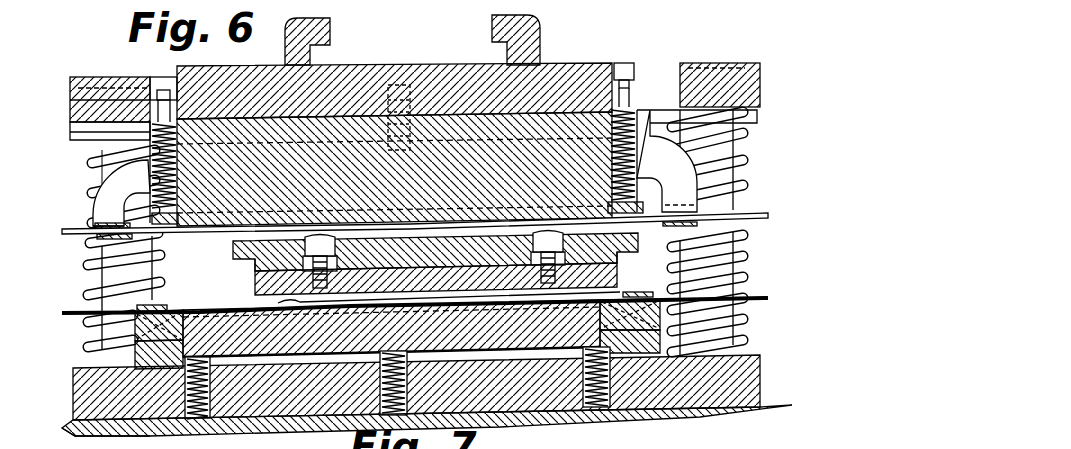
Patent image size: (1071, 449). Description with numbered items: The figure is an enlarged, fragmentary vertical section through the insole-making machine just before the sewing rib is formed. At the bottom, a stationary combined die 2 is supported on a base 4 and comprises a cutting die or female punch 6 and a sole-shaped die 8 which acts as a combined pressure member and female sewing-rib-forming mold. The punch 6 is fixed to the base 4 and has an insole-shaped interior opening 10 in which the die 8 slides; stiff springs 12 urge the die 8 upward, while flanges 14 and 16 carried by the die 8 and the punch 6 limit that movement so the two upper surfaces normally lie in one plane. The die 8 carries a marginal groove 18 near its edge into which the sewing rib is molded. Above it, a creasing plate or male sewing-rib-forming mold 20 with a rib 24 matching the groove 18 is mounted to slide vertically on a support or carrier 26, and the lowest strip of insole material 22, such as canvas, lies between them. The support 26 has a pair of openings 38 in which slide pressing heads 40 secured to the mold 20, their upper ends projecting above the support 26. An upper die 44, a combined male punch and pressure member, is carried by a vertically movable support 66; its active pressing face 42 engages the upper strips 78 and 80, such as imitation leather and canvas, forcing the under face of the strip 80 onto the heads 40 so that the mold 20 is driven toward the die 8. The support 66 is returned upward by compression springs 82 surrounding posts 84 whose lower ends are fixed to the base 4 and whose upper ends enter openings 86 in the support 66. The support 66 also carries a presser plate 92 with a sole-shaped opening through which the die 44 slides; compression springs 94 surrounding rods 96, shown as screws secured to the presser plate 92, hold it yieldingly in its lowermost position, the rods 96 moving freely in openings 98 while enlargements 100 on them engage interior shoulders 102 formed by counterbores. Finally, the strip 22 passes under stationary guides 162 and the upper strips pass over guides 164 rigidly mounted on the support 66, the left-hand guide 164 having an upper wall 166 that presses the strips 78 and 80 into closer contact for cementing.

The stationary combined die 2 is at (415, 420).
The base 4 is at (80, 425).
The cutting die or female punch 6 is at (130, 378).
The die 8 is at (290, 345).
The interior opening 10 is at (92, 322).
The stiff springs 12 is at (203, 418).
The flange 14 is at (135, 353).
The flange 16 is at (135, 340).
The marginal groove 18 is at (597, 300).
The creasing plate or male sewing-rib-forming mold 20 is at (255, 292).
The strip of insole material 22 is at (68, 312).
The rib 24 is at (528, 298).
The support or carrier 26 is at (233, 252).
The openings 38 is at (255, 273).
The pressing heads 40 is at (434, 259).
The active pressing face 42 is at (266, 148).
The die 44 is at (345, 135).
The support 66 is at (553, 64).
The upper sheet or strip 78 is at (63, 231).
The sheet or strip 80 is at (88, 248).
The compression springs 82 is at (88, 162).
The rods or posts 84 is at (90, 176).
The openings 86 is at (83, 77).
The presser plate 92 is at (140, 237).
The compression springs 94 is at (72, 130).
The rods 96 is at (178, 108).
The openings 98 is at (166, 77).
The enlargements 100 is at (72, 95).
The interior shoulders 102 is at (72, 111).
The stationary guides 162 is at (225, 295).
The guides 164 is at (90, 246).
The upper wall 166 is at (98, 223).